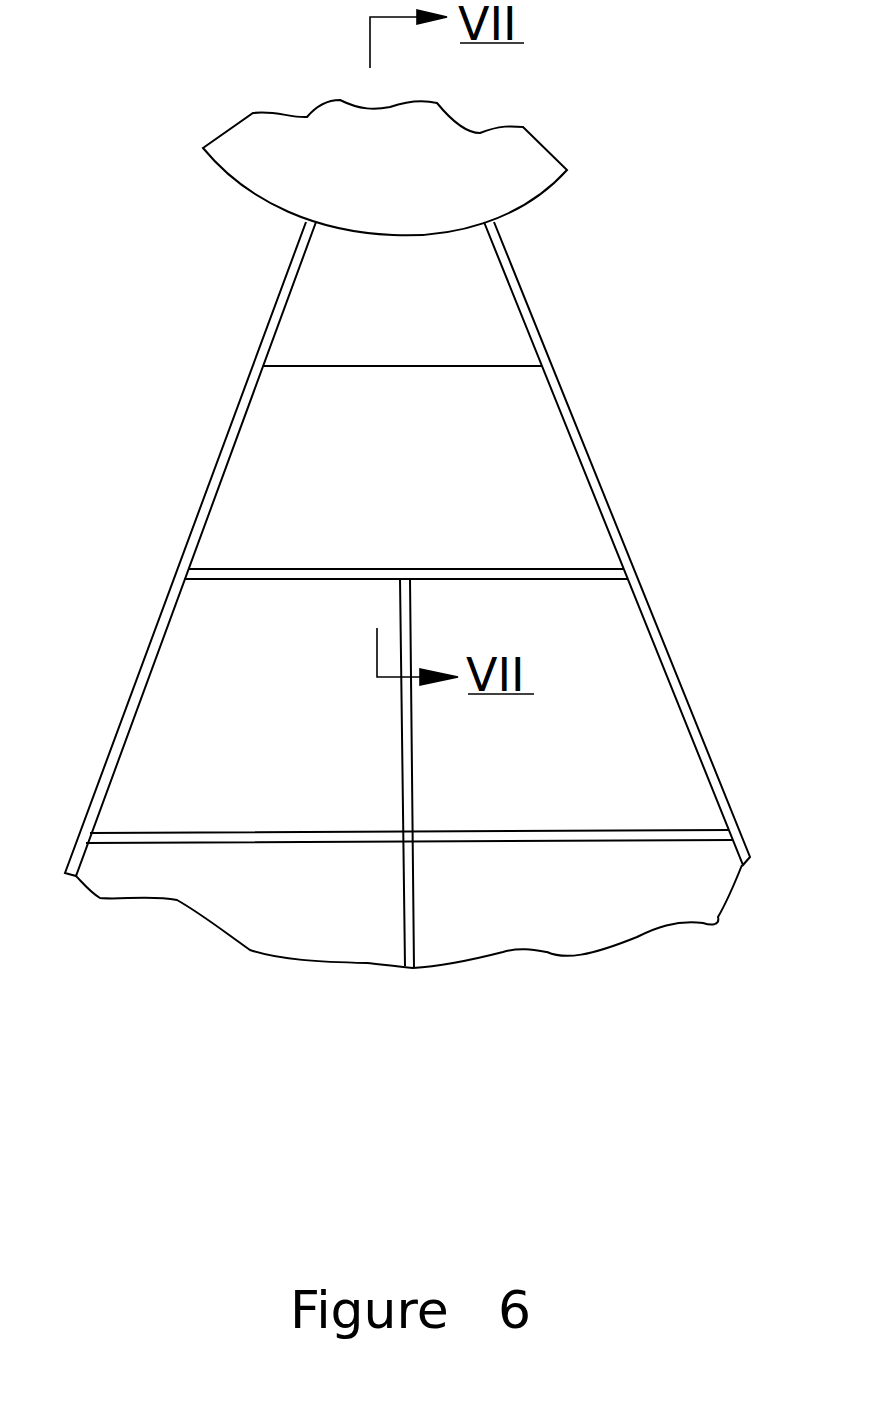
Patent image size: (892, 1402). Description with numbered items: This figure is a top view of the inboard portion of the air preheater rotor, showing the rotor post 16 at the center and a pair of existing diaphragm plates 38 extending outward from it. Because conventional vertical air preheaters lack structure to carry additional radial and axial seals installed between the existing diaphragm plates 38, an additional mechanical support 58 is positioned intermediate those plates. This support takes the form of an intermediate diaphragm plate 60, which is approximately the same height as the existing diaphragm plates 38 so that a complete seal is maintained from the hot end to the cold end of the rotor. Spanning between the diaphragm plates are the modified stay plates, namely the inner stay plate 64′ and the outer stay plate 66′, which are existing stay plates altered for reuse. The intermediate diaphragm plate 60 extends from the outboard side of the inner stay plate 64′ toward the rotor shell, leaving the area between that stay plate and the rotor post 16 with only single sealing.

The rotor post 16 is at (398, 193).
The existing diaphragm plates 38 is at (210, 490).
The additional mechanical support 58 is at (200, 678).
The intermediate diaphragm plate 60 is at (402, 887).
The modified inner stay plate 64′ is at (358, 569).
The modified outer stay plate 66′ is at (290, 833).